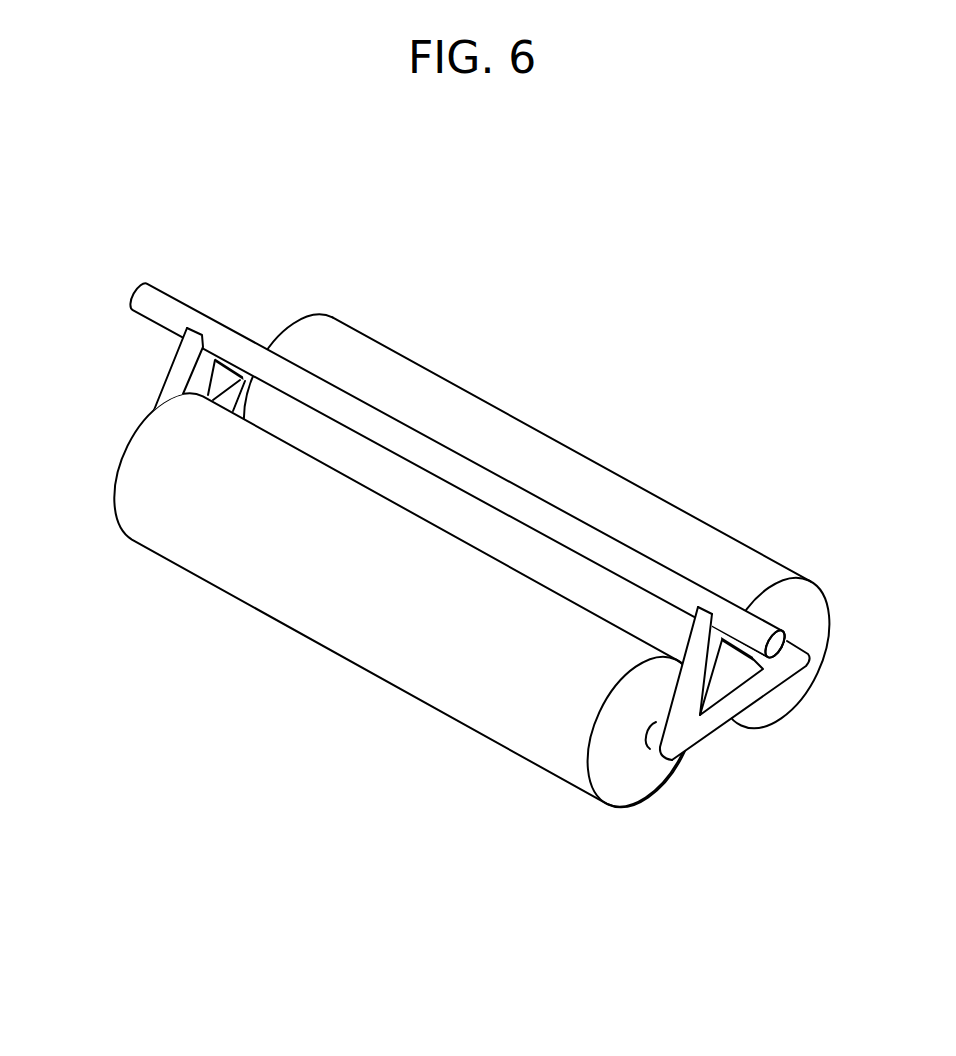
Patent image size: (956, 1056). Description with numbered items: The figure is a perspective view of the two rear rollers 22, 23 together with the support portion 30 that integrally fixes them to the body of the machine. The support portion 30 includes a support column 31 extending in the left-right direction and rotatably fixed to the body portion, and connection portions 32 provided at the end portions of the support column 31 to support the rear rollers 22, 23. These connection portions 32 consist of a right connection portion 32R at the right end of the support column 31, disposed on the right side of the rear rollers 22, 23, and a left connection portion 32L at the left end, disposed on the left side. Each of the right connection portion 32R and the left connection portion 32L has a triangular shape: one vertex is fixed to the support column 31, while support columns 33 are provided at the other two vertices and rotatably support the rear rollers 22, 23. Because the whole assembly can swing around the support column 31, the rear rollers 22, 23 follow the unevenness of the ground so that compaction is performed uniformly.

The rear roller 22 is at (445, 695).
The rear roller 23 is at (574, 466).
The support portion 30 is at (242, 250).
The support column 31 is at (234, 347).
The connection portions 32 is at (433, 569).
The right connection portion 32R is at (182, 365).
The left connection portion 32L is at (717, 717).
The support column 33 is at (638, 746).